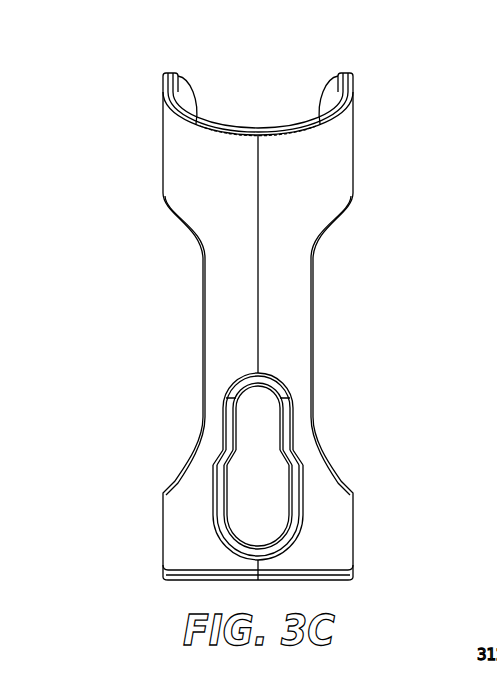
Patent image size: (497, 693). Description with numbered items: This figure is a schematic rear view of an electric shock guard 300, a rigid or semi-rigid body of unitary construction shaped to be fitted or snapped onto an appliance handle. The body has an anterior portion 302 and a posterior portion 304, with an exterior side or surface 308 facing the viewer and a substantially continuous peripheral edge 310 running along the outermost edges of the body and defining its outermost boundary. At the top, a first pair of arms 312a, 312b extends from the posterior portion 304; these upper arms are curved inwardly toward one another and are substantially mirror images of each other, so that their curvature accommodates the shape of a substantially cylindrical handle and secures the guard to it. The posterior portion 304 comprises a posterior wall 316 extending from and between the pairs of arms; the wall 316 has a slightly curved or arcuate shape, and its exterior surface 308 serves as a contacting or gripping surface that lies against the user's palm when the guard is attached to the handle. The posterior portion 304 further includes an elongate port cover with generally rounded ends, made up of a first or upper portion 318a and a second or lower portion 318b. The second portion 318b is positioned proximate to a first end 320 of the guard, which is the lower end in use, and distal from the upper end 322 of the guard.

The electric shock guard 300 is at (403, 72).
The anterior portion 302 is at (250, 121).
The posterior portion 304 is at (168, 276).
The exterior side or surface 308 is at (297, 181).
The peripheral edge 310 is at (200, 338).
The first arm 312a is at (332, 90).
The first arm 312b is at (183, 90).
The posterior wall 316 is at (287, 285).
The first portion of port cover 318a is at (258, 394).
The second portion of port cover 318b is at (258, 513).
The first end 320 is at (360, 583).
The upper end 322 is at (142, 75).